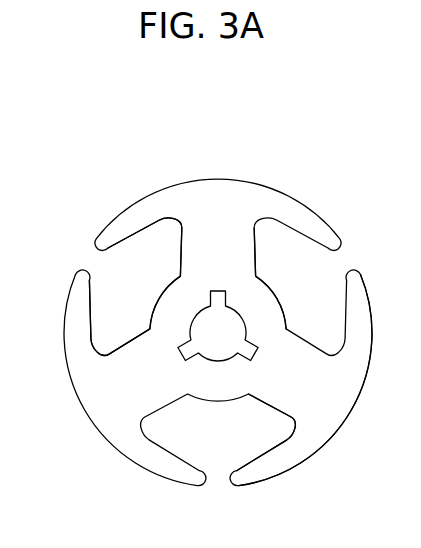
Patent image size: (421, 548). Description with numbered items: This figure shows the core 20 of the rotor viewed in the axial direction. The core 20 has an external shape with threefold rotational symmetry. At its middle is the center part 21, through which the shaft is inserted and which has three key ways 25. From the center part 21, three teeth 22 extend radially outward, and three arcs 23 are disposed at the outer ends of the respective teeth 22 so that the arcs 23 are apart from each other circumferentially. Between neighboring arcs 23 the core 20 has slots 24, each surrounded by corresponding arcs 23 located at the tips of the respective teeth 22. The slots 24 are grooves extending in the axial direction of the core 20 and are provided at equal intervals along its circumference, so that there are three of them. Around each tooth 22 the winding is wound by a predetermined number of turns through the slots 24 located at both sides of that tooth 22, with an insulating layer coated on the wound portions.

The core 20 is at (192, 163).
The center part 21 is at (268, 300).
The teeth 22 is at (280, 407).
The arcs 23 is at (308, 455).
The slots 24 is at (124, 288).
The key ways 25 is at (186, 349).